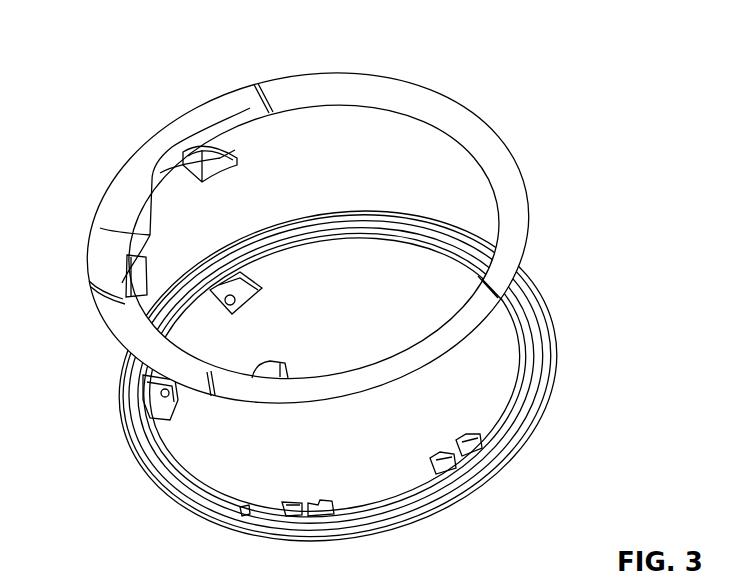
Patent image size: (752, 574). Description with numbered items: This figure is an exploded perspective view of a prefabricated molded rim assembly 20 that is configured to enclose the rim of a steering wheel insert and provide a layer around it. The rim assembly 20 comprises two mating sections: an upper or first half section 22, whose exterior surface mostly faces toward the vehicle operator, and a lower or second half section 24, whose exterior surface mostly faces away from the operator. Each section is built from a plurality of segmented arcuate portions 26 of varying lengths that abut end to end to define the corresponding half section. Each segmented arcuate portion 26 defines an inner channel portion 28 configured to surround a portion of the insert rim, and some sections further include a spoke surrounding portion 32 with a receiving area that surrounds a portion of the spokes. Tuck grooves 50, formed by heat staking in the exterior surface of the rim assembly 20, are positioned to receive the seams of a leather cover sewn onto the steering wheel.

The rim assembly 20 is at (320, 303).
The upper or first half section 22 is at (300, 238).
The lower or second half section 24 is at (331, 373).
The segmented arcuate portion 26 is at (466, 118).
The inner channel portion 28 is at (537, 326).
The spoke surrounding portion 32 is at (222, 157).
The tuck groove 50 is at (251, 89).